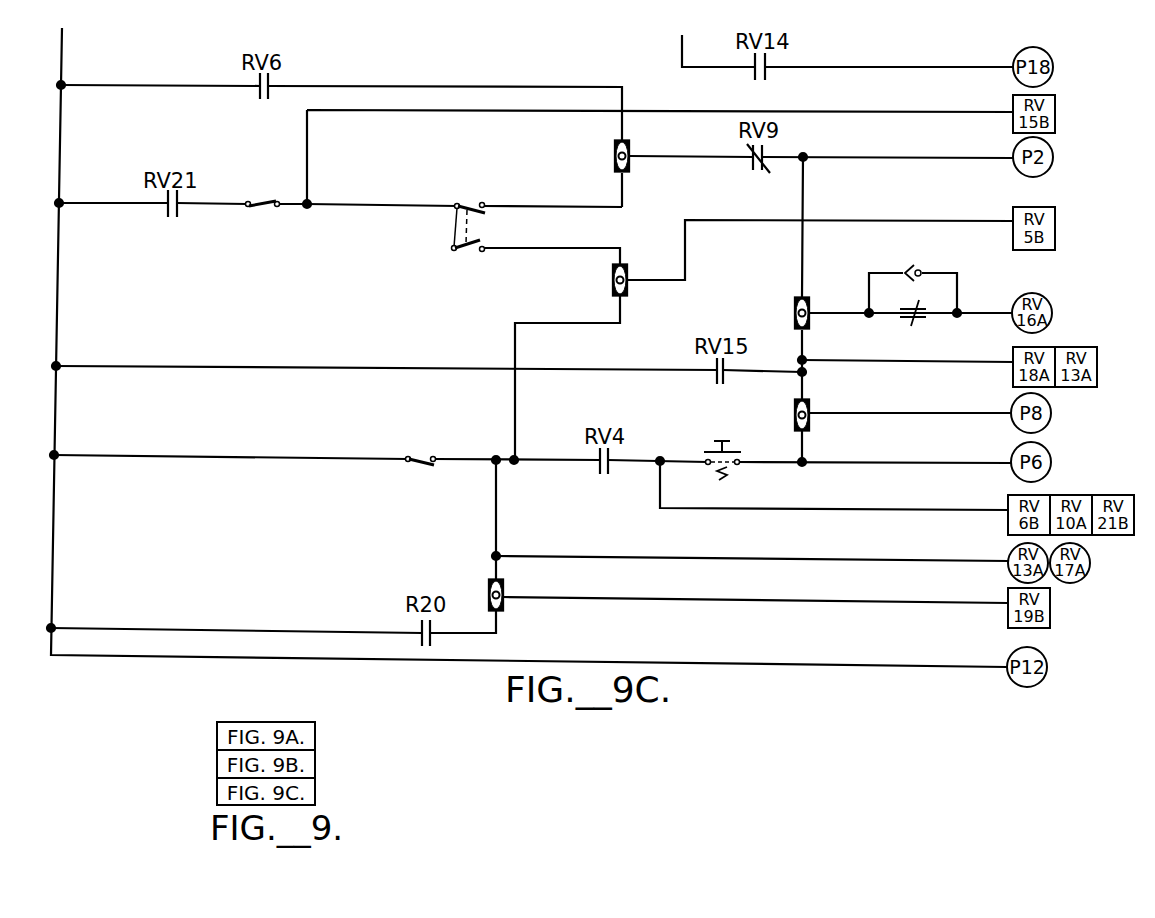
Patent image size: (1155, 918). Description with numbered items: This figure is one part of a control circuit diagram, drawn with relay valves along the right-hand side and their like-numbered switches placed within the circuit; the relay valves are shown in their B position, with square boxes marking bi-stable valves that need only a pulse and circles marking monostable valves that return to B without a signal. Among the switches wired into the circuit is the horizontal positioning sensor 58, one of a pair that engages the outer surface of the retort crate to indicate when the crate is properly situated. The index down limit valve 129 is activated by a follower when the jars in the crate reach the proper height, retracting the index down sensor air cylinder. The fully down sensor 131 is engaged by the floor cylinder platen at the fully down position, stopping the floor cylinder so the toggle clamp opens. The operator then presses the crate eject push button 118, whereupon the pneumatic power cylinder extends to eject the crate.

The horizontal positioning sensor 58 is at (253, 199).
The index down limit valve 129 is at (471, 205).
The fully down sensor 131 is at (421, 455).
The crate eject push button 118 is at (723, 446).